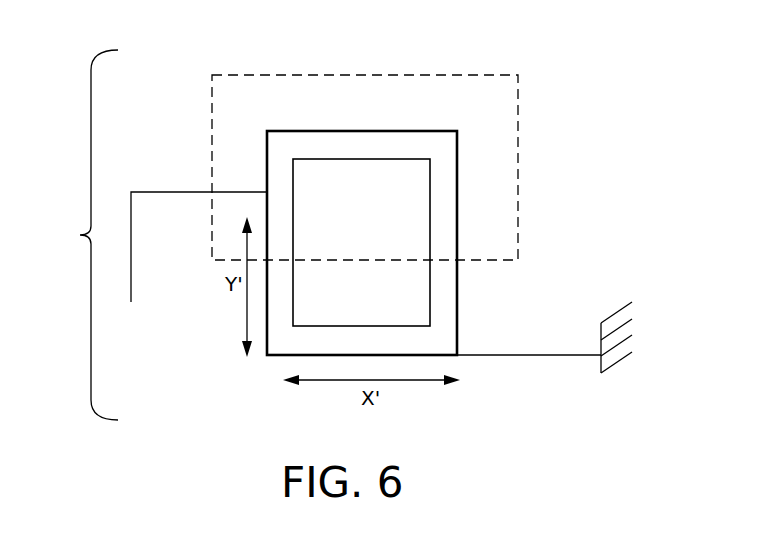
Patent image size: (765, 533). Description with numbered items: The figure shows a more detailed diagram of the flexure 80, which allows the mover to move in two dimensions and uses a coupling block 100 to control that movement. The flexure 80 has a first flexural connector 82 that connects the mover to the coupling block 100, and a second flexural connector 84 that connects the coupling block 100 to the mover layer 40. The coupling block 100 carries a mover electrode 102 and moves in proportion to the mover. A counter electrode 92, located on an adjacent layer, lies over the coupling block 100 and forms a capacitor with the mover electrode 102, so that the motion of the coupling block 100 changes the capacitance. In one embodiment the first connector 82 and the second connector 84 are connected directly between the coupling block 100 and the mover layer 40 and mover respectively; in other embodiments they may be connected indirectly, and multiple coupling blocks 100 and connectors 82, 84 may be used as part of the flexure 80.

The mover layer 40 is at (630, 337).
The flexure 80 is at (80, 236).
The first flexural connector 82 is at (154, 192).
The second flexural connector 84 is at (523, 355).
The counter electrode 92 is at (467, 98).
The coupling block 100 is at (328, 156).
The mover electrode 102 is at (350, 186).